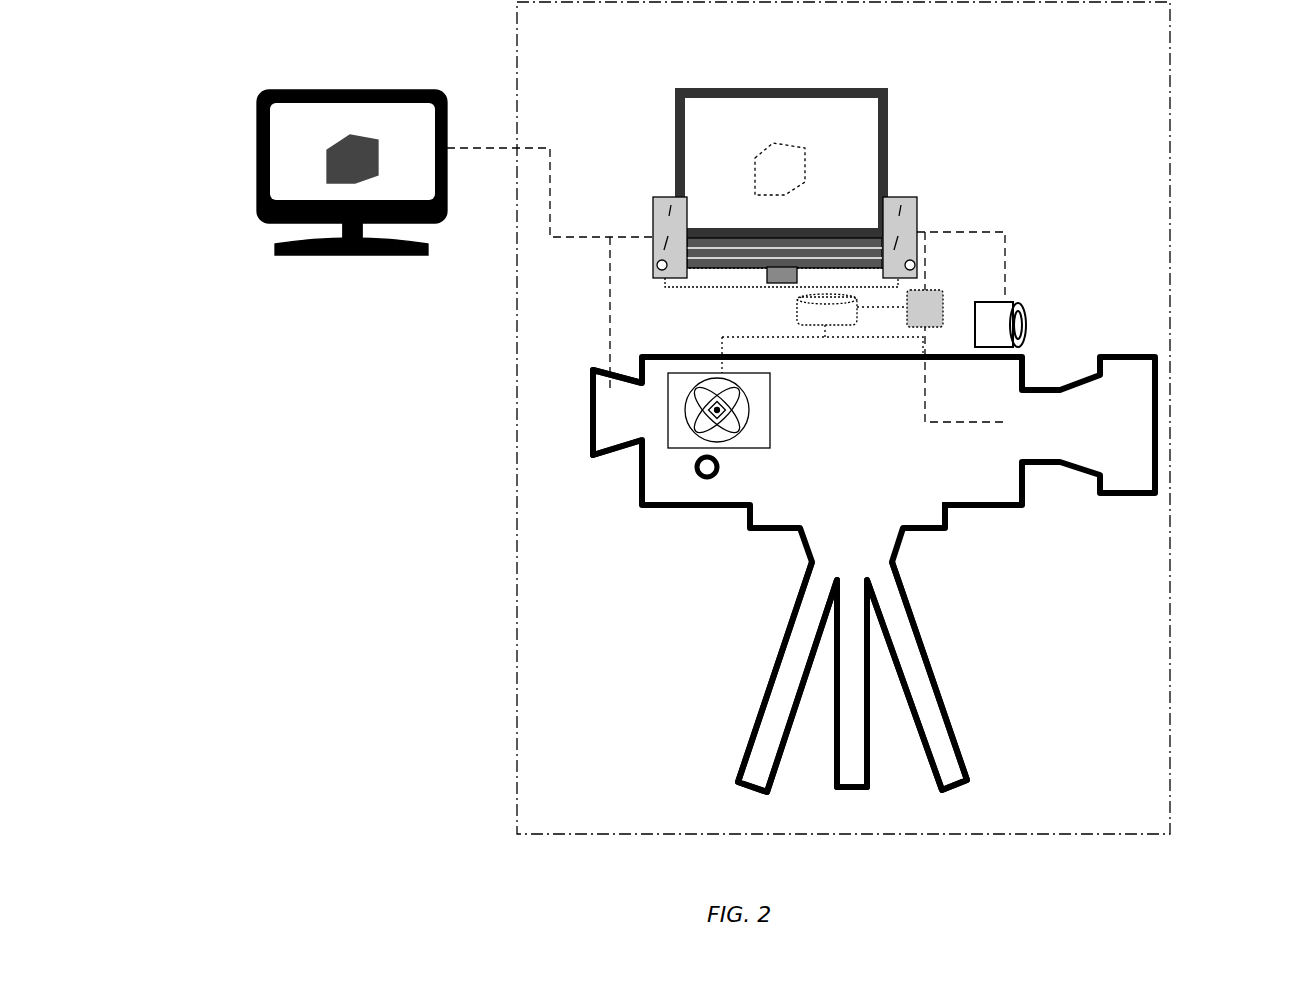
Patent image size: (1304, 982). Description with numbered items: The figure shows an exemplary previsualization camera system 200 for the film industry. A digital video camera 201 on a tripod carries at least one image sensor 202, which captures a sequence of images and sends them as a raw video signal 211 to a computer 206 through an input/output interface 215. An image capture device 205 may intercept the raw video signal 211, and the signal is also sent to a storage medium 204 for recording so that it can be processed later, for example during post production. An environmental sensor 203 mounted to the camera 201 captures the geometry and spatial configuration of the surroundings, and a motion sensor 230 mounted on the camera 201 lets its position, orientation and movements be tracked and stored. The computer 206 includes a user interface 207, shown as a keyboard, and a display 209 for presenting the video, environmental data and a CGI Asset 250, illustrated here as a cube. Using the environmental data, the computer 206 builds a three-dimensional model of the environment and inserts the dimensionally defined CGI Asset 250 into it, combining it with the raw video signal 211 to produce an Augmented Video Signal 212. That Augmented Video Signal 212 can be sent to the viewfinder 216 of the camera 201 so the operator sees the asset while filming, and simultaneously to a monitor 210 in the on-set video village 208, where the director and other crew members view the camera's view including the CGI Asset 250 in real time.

The previsualization camera system 200 is at (1176, 162).
The digital video camera 201 is at (930, 520).
The image sensor 202 is at (874, 574).
The environmental sensor 203 is at (1000, 315).
The storage medium 204 is at (800, 315).
The image capture device 205 is at (928, 295).
The computer 206 is at (680, 117).
The user interface 207 is at (743, 233).
The video village 208 is at (226, 97).
The display 209 is at (792, 108).
The monitor 210 is at (290, 222).
The raw video signal 211 is at (933, 425).
The Augmented Video Signal 212 is at (622, 238).
The input/output interface 215 is at (655, 200).
The viewfinder 216 is at (602, 428).
The motion sensor 230 is at (690, 395).
The CGI Asset 250 is at (350, 137).